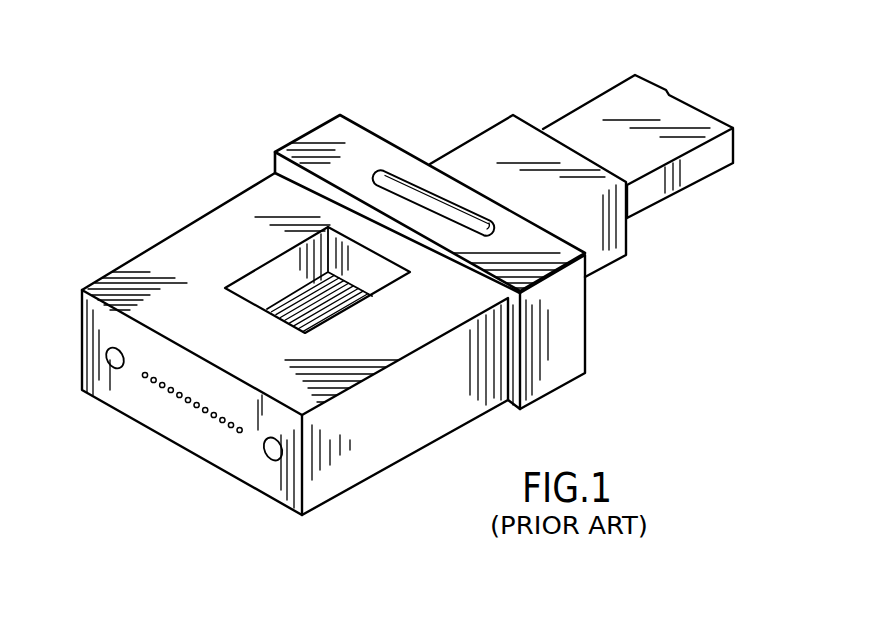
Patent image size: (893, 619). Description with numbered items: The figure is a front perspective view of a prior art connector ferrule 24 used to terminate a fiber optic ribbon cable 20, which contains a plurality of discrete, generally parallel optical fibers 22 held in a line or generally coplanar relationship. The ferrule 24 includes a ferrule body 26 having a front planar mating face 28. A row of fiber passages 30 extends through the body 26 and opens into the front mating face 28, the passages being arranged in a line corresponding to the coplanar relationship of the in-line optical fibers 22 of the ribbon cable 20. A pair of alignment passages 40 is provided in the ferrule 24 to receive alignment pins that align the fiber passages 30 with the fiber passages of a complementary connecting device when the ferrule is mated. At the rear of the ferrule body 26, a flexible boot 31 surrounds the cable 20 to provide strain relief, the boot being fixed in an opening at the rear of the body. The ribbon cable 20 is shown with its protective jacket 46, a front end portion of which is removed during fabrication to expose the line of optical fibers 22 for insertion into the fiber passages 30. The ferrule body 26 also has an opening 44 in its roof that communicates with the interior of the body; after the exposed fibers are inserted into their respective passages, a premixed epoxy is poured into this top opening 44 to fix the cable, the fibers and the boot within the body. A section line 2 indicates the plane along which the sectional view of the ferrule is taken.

The section line 2- 2 is at (742, 67).
The fiber optic ribbon cable 20 is at (597, 80).
The optical fibers 22 is at (293, 300).
The connector ferrule 24 is at (262, 153).
The ferrule body 26 is at (400, 433).
The front planar mating face 28 is at (240, 462).
The fiber passages 30 is at (233, 427).
The flexible boot 31 is at (605, 250).
The alignment passages 40 is at (107, 356).
The opening 44 is at (337, 247).
The protective jacket 46 is at (667, 147).